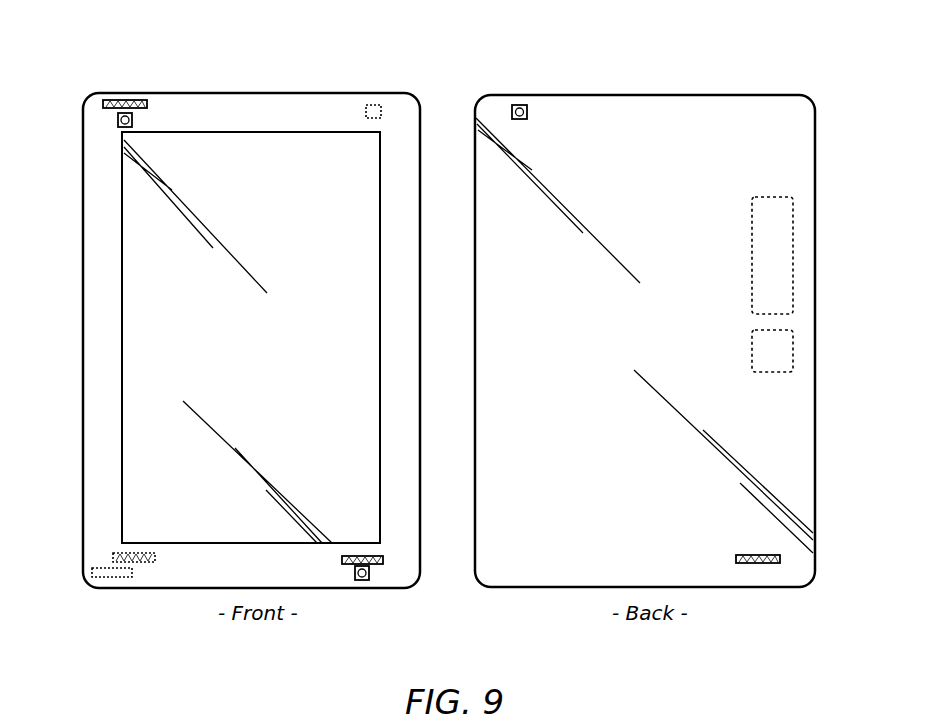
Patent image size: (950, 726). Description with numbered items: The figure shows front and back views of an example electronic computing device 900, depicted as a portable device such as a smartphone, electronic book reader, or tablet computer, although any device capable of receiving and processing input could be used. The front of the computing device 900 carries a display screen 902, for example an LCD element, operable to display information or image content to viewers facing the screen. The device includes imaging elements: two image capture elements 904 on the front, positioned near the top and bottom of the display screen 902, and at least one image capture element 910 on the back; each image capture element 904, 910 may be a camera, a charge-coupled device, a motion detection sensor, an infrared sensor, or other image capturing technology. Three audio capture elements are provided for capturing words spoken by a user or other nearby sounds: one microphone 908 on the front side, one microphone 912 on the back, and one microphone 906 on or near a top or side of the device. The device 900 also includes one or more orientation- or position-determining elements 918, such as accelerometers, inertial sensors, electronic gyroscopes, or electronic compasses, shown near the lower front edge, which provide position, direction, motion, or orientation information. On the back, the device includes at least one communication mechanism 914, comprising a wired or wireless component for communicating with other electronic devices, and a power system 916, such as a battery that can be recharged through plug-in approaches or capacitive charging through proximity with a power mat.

The electronic computing device 900 is at (843, 103).
The display screen 902 is at (122, 250).
The image capture element 904 is at (118, 120).
The microphone 906 is at (132, 104).
The microphone 908 is at (378, 565).
The image capture element 910 is at (372, 105).
The microphone 912 is at (138, 563).
The communication mechanism 914 is at (793, 275).
The power system 916 is at (793, 352).
The orientation- or position-determining element 918 is at (110, 578).